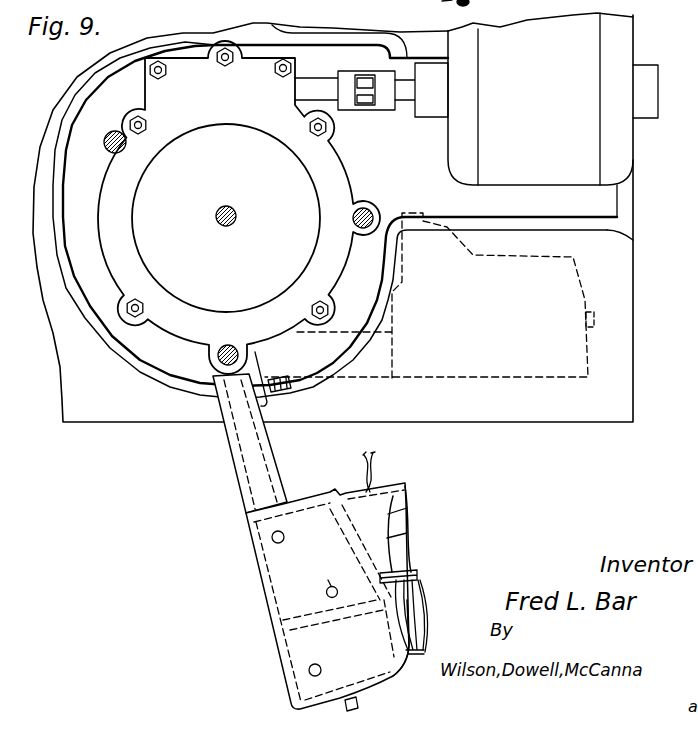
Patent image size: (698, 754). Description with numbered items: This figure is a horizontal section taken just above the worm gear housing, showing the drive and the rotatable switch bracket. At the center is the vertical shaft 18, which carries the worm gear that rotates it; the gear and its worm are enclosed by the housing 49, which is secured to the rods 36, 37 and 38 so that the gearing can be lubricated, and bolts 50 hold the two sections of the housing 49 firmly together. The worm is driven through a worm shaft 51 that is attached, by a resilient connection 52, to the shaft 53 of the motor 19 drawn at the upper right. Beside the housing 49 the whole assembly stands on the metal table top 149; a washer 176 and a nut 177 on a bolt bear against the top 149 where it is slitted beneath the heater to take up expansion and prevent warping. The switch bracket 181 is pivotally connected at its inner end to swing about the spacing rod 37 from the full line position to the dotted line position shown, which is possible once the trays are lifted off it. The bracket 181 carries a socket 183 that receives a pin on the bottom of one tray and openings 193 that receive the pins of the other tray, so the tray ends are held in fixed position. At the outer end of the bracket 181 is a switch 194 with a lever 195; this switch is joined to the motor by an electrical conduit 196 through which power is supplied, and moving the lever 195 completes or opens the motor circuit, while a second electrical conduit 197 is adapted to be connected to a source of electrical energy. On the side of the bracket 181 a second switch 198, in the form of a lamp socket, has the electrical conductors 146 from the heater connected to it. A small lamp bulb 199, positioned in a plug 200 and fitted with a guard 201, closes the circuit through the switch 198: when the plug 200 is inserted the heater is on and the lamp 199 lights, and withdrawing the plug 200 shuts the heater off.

The vertical shaft 18 is at (236, 212).
The motor 19 is at (553, 99).
The rod 36 is at (376, 213).
The spacing rod 37 is at (214, 357).
The rod 38 is at (108, 136).
The housing 49 is at (343, 176).
The bolts 50 is at (326, 135).
The worm shaft 51 is at (305, 89).
The resilient connection 52 is at (366, 92).
The motor shaft 53 is at (403, 92).
The electrical conductors 146 is at (381, 470).
The table top 149 is at (622, 331).
The washer 176 is at (442, 1).
The nut 177 is at (468, 3).
The switch bracket 181 is at (237, 461).
The socket 183 is at (327, 596).
The openings 193 is at (272, 537).
The switch 194 is at (399, 666).
The lever 195 is at (359, 705).
The electrical conduit 196 is at (635, 236).
The second electrical conduit 197 is at (290, 389).
The second switch 198 is at (384, 509).
The lamp bulb 199 is at (413, 607).
The plug 200 is at (403, 558).
The guard 201 is at (428, 643).